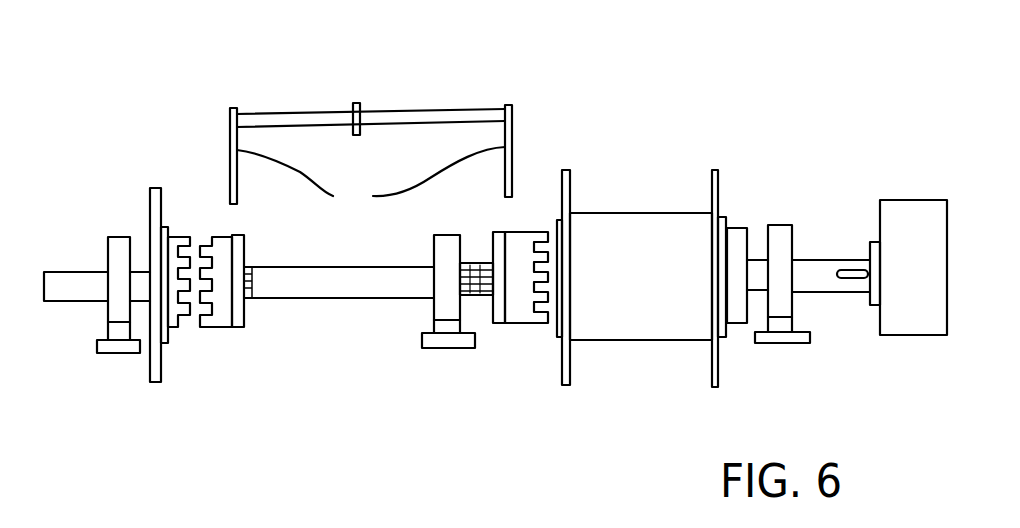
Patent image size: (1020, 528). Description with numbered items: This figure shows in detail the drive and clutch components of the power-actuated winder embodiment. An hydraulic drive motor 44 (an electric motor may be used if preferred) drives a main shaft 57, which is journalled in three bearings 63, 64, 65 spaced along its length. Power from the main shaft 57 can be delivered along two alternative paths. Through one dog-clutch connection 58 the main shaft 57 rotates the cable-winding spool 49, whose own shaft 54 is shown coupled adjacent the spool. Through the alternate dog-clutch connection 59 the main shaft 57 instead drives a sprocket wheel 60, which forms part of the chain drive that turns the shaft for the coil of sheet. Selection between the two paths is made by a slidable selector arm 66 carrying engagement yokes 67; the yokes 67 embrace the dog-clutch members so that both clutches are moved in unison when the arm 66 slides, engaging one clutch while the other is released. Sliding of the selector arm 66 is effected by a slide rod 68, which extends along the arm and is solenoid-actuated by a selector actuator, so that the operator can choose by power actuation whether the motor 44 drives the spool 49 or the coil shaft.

The hydraulic drive motor 44 is at (913, 225).
The cable-winding spool 49 is at (633, 228).
The shaft of the cable-winding spool 54 is at (757, 270).
The main shaft 57 is at (367, 288).
The dog-clutch connection 58 is at (528, 345).
The alternate dog-clutch connection 59 is at (205, 343).
The sprocket wheel 60 is at (148, 218).
The bearing 63 is at (117, 310).
The bearing 64 is at (443, 307).
The bearing 65 is at (785, 302).
The slidable selector arm 66 is at (262, 78).
The engagement yokes 67 is at (371, 179).
The slide rod 68 is at (434, 113).